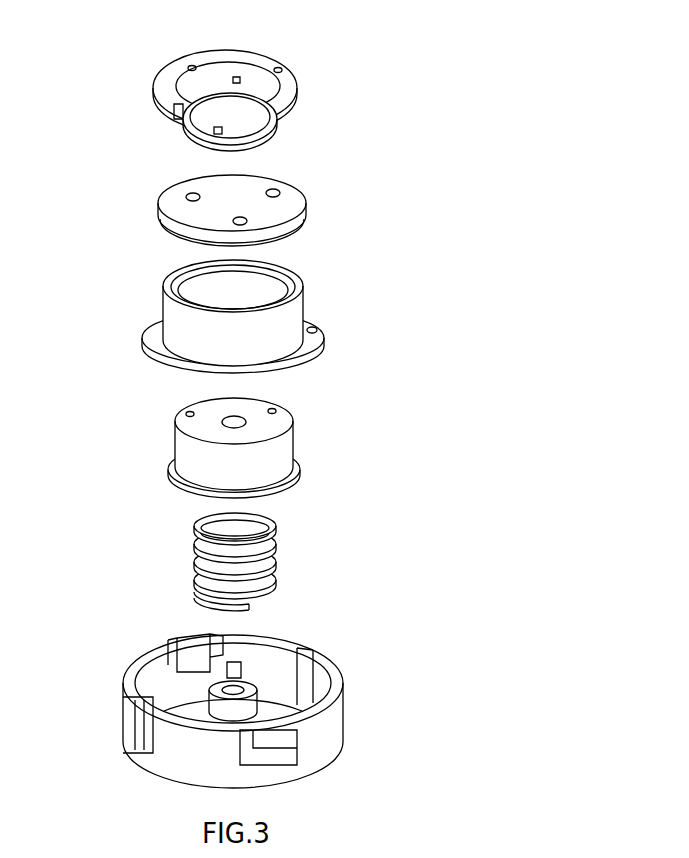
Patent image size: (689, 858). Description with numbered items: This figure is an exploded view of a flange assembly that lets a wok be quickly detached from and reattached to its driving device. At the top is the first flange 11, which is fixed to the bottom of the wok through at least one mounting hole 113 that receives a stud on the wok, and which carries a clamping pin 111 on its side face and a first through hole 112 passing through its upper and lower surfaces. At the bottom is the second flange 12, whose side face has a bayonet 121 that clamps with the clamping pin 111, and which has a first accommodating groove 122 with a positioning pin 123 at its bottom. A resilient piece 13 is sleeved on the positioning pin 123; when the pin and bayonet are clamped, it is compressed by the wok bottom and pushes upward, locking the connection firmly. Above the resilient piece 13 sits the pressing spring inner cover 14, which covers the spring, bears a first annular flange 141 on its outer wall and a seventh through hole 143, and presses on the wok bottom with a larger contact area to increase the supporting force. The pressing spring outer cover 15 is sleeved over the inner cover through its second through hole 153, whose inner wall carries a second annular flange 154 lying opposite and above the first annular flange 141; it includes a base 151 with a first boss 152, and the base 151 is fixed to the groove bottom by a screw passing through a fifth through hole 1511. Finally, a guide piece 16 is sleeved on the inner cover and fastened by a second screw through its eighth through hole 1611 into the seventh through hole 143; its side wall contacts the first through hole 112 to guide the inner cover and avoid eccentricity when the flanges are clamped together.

The first flange 11 is at (340, 77).
The clamping pin 111 is at (283, 110).
The first through hole 112 is at (231, 123).
The mounting hole 113 is at (280, 53).
The guide piece 16 is at (242, 204).
The eighth through hole 1611 is at (195, 199).
The pressing spring outer cover 15 is at (297, 311).
The base 151 is at (234, 358).
The fifth through hole 1511 is at (200, 362).
The first boss 152 is at (268, 327).
The second through hole 153 is at (267, 288).
The second annular flange 154 is at (247, 267).
The pressing spring inner cover 14 is at (365, 448).
The first annular flange 141 is at (272, 490).
The seventh through hole 143 is at (233, 443).
The resilient piece 13 is at (257, 594).
The second flange 12 is at (352, 700).
The bayonet 121 is at (276, 748).
The first accommodating groove 122 is at (327, 666).
The positioning pin 123 is at (236, 689).